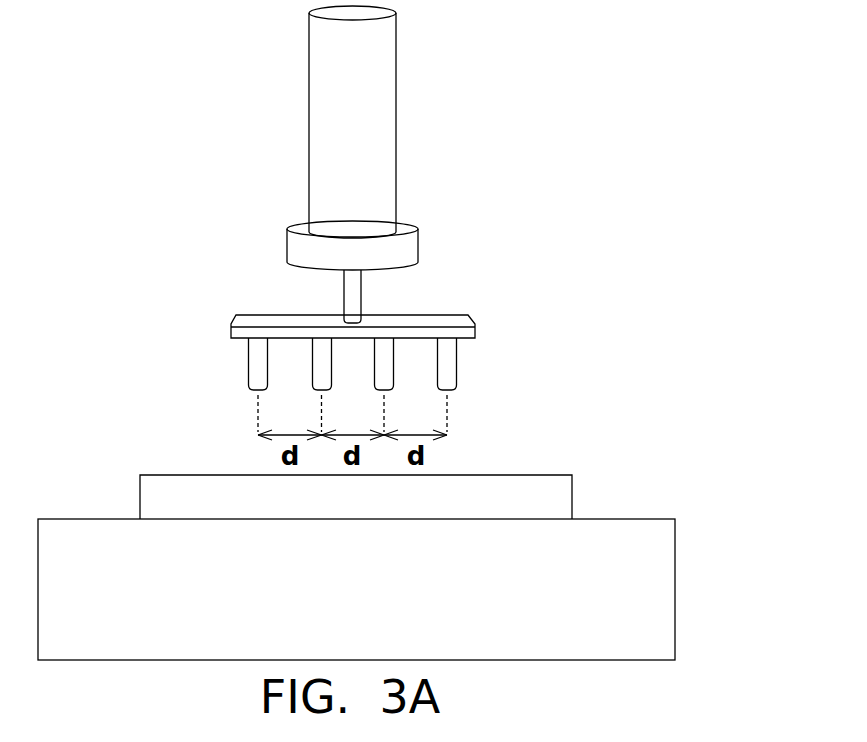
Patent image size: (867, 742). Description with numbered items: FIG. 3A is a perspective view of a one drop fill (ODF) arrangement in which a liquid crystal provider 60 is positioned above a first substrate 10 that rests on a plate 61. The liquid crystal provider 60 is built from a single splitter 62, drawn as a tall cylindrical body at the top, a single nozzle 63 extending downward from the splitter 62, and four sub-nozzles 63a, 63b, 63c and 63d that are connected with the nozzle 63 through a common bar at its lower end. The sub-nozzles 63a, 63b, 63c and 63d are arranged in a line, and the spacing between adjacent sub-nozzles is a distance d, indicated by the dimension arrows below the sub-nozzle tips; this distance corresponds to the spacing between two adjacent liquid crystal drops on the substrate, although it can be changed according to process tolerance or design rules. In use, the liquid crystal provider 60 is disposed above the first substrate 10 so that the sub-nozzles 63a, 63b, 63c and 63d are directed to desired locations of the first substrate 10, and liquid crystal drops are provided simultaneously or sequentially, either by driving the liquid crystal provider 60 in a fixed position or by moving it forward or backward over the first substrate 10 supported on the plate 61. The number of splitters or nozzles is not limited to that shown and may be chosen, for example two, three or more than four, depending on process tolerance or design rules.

The liquid crystal provider 60 is at (228, 165).
The splitter 62 is at (386, 38).
The nozzle 63 is at (356, 288).
The sub-nozzle 63a is at (248, 367).
The sub-nozzle 63b is at (314, 366).
The sub-nozzle 63c is at (390, 365).
The sub-nozzle 63d is at (457, 367).
The first substrate 10 is at (553, 488).
The plate 61 is at (668, 605).